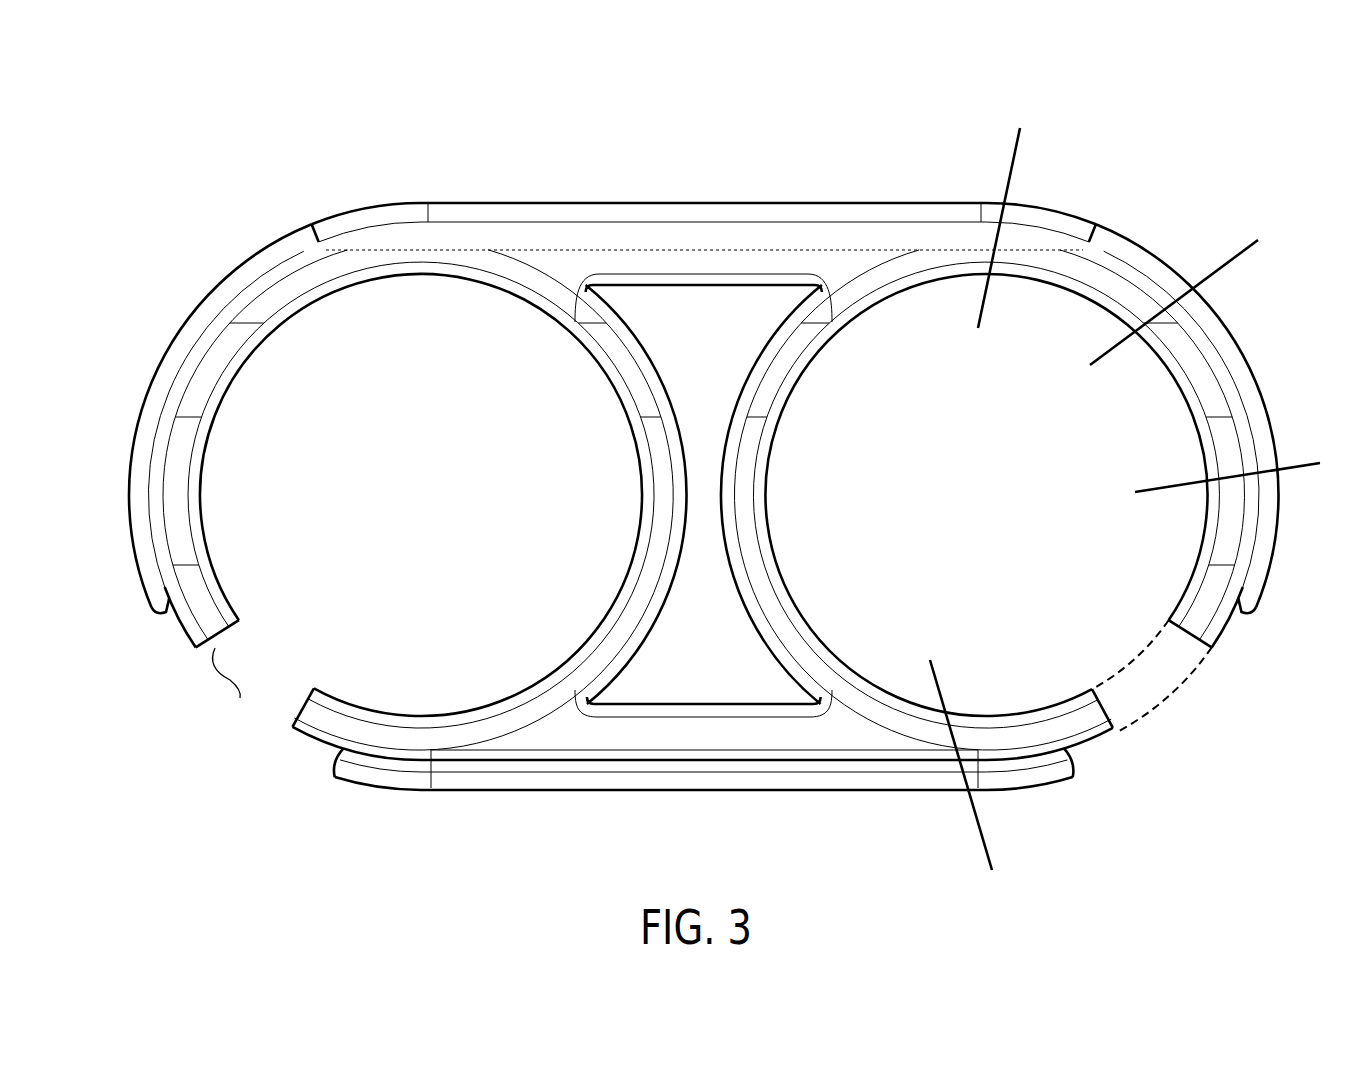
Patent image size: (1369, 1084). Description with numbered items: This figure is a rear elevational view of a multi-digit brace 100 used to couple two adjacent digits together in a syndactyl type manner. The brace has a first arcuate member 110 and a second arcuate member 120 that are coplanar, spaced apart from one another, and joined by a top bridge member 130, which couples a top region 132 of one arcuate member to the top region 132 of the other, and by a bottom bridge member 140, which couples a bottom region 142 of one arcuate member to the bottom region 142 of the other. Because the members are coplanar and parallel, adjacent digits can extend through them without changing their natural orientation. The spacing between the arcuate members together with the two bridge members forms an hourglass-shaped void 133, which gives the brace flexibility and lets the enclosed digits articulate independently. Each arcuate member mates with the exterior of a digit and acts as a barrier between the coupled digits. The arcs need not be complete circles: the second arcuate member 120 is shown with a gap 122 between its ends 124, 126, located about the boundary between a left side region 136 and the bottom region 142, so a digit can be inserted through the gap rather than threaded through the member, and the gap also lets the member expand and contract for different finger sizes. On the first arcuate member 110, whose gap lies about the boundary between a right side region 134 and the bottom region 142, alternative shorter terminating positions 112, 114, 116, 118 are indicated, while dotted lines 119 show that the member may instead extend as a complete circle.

The brace 100 is at (1185, 112).
The first arcuate member 110 is at (770, 458).
The terminating position 112 is at (984, 320).
The terminating position 114 is at (1110, 352).
The terminating position 116 is at (1170, 492).
The terminating position 118 is at (953, 688).
The dotted lines 119 is at (1165, 693).
The second arcuate member 120 is at (640, 483).
The gap 122 is at (287, 727).
The end 124 is at (240, 636).
The end 126 is at (288, 703).
The top bridge member 130 is at (722, 275).
The top region 132 is at (622, 130).
The hourglass-shaped void 133 is at (733, 367).
The right side region 134 is at (762, 300).
The left side region 136 is at (128, 394).
The bottom bridge member 140 is at (722, 747).
The bottom region 142 is at (555, 800).